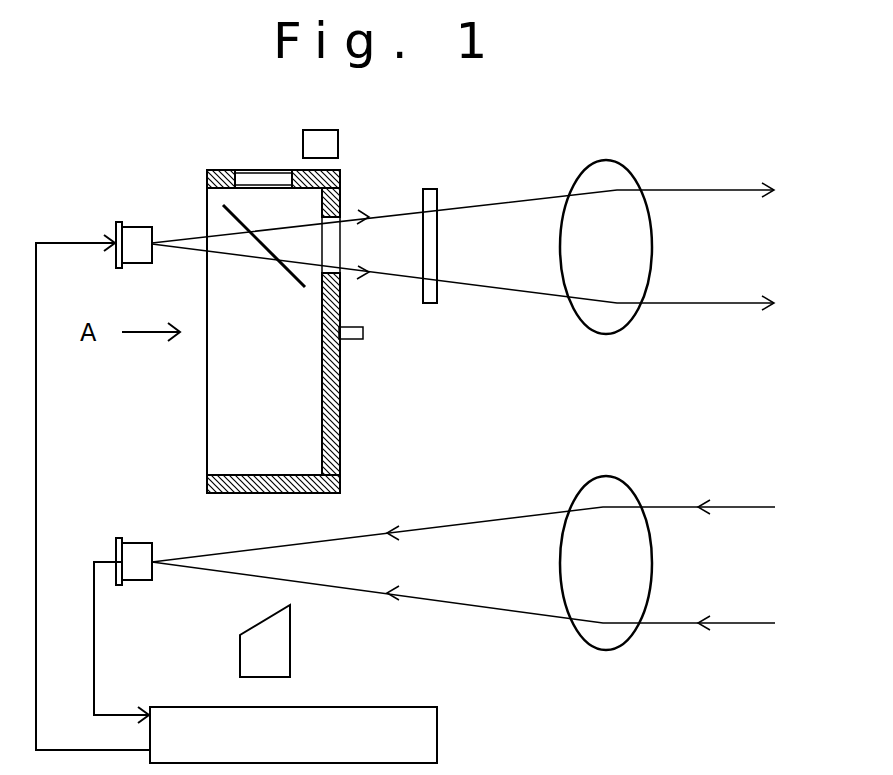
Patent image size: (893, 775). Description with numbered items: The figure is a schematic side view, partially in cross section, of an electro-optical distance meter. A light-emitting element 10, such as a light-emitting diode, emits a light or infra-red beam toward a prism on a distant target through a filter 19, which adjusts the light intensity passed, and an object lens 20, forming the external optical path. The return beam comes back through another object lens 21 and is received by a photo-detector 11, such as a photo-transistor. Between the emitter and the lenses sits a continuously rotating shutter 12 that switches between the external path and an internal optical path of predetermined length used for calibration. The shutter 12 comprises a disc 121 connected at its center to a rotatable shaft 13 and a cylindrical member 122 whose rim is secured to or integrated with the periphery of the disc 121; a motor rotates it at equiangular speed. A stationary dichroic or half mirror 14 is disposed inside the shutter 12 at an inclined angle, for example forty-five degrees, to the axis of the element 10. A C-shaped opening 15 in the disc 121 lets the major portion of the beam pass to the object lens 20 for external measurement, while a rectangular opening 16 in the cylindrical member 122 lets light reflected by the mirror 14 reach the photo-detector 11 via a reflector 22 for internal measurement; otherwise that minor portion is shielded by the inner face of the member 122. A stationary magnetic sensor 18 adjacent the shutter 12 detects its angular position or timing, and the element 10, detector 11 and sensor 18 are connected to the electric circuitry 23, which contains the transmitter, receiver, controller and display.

The light-emitting element 10 is at (132, 226).
The photo-detector 11 is at (135, 543).
The shutter 12 is at (293, 168).
The rotatable shaft 13 is at (363, 330).
The half mirror 14 is at (226, 204).
The C-shaped opening 15 is at (334, 215).
The rectangular opening 16 is at (236, 177).
The magnetic sensor 18 is at (325, 130).
The filter 19 is at (440, 293).
The object lens 20 is at (592, 163).
The object lens 21 is at (625, 487).
The reflector 22 is at (290, 638).
The electric circuitry 23 is at (438, 732).
The disc 121 is at (339, 400).
The cylindrical member 122 is at (283, 495).